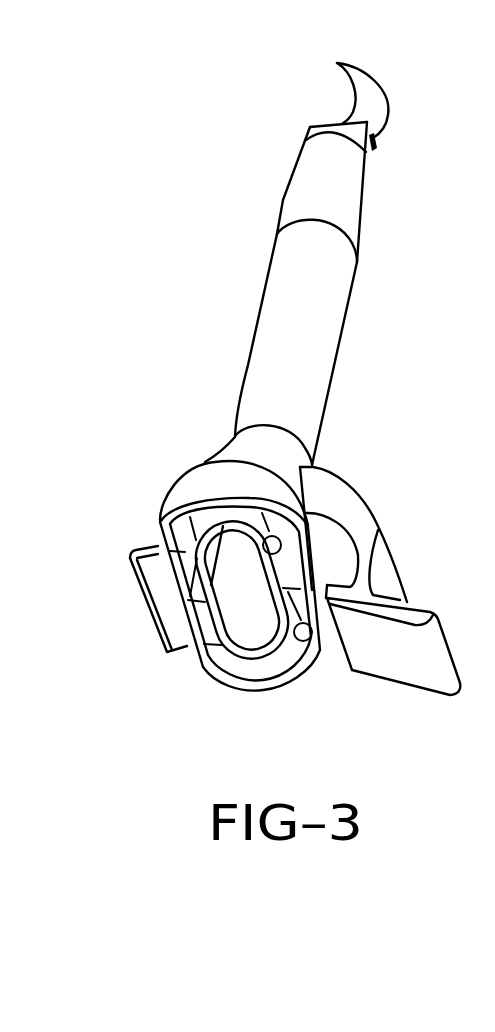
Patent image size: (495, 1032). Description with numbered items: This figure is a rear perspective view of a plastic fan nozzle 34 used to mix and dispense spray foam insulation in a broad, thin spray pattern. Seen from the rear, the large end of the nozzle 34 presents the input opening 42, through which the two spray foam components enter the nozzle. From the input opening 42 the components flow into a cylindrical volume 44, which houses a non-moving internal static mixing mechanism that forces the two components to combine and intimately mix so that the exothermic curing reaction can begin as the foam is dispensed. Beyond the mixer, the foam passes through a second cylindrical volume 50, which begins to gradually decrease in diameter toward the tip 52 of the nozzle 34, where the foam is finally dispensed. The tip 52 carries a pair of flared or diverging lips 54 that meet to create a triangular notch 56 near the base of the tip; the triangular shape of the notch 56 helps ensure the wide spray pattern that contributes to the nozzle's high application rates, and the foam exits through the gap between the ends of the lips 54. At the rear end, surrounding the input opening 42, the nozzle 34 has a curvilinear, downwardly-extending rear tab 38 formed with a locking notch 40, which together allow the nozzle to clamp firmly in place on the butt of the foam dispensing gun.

The nozzle 34 is at (204, 239).
The rear tab 38 is at (340, 492).
The locking notch 40 is at (418, 677).
The input opening 42 is at (235, 575).
The cylindrical volume 44 is at (318, 341).
The second cylindrical volume 50 is at (353, 200).
The tip 52 is at (315, 126).
The flared or diverging lips 54 is at (346, 93).
The triangular notch 56 is at (372, 143).